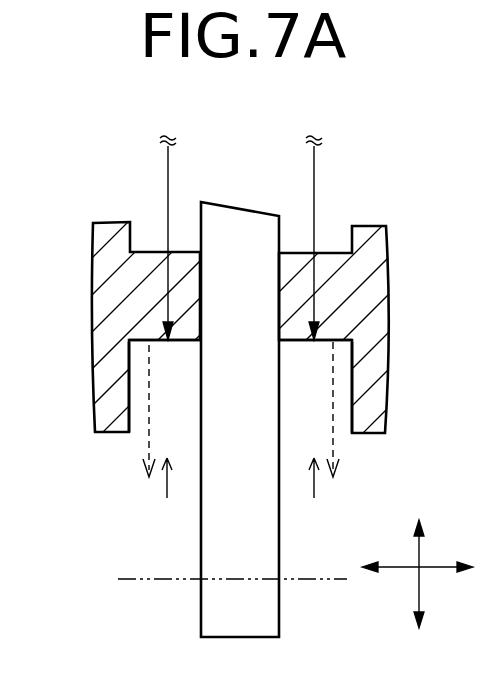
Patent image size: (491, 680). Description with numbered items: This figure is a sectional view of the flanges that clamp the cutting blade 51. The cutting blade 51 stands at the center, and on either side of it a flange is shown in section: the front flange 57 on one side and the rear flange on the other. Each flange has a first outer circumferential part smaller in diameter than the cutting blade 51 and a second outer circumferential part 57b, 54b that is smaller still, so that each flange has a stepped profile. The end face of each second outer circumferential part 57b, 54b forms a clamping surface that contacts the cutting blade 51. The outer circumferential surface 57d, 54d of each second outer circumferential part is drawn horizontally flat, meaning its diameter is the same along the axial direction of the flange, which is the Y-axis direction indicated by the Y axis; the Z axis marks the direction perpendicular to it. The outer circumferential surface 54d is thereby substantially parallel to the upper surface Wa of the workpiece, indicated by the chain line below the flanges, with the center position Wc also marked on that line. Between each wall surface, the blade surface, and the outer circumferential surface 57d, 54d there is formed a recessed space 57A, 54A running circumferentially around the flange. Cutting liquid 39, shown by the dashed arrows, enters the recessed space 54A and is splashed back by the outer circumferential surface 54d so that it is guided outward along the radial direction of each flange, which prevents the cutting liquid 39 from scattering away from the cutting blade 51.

The cutting blade 51 is at (250, 611).
The front flange 57 is at (490, 324).
The outer circumferential surface 57d is at (149, 345).
The outer circumferential surface 54d is at (330, 345).
The recessed space 57A is at (183, 418).
The recessed space 54A is at (301, 394).
The second outer circumferential part 57b is at (162, 494).
The second outer circumferential part 54b is at (317, 494).
The cutting liquid 39 is at (148, 445).
The upper surface of the workpiece Wa is at (132, 581).
The center position Wc is at (176, 560).
The Z axis Z is at (420, 561).
The Y-axis direction Y is at (426, 572).